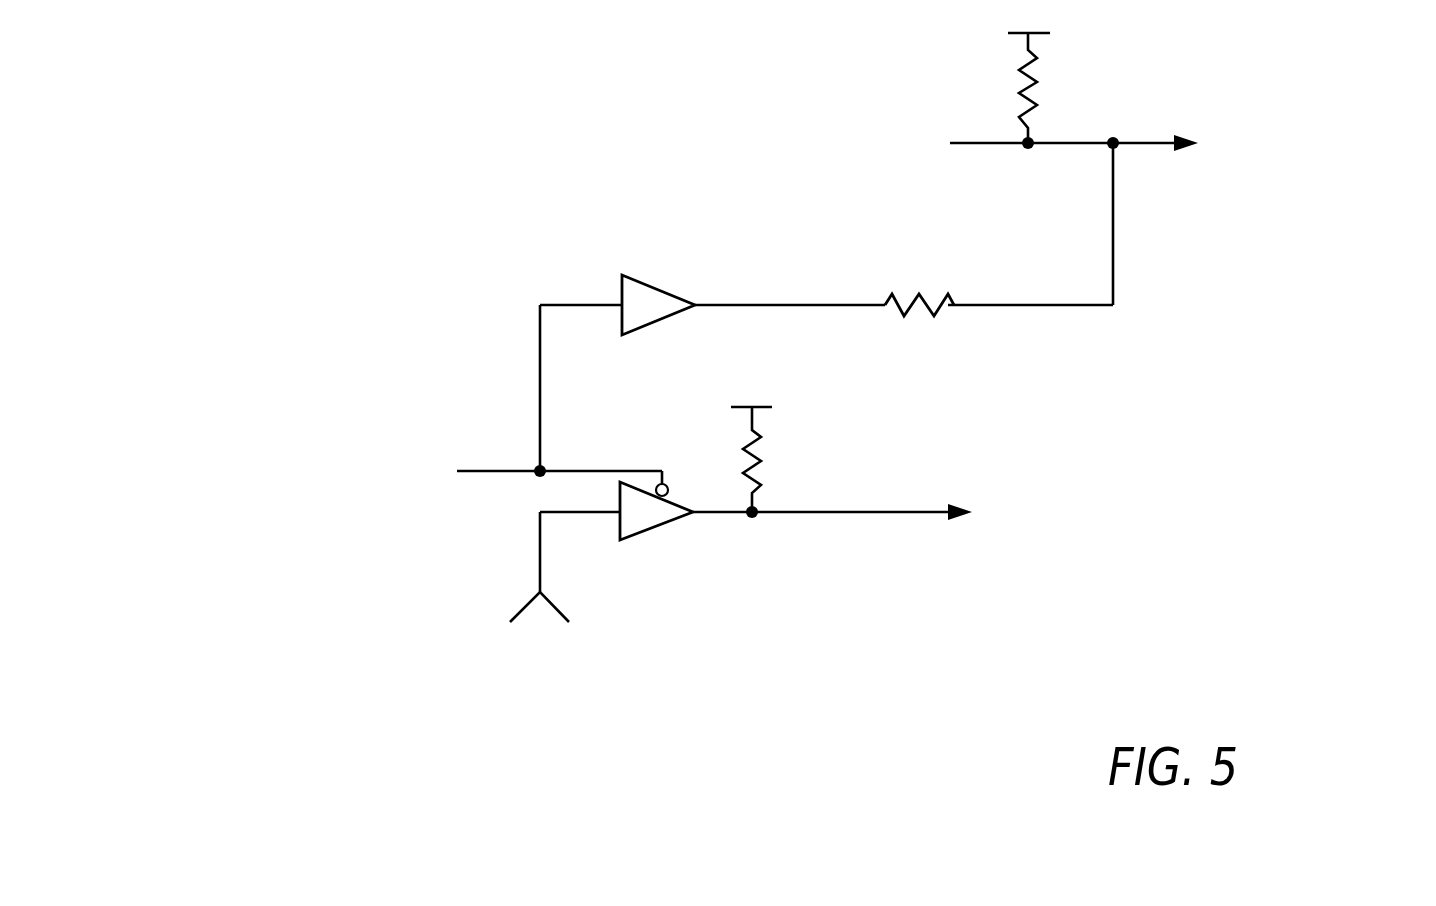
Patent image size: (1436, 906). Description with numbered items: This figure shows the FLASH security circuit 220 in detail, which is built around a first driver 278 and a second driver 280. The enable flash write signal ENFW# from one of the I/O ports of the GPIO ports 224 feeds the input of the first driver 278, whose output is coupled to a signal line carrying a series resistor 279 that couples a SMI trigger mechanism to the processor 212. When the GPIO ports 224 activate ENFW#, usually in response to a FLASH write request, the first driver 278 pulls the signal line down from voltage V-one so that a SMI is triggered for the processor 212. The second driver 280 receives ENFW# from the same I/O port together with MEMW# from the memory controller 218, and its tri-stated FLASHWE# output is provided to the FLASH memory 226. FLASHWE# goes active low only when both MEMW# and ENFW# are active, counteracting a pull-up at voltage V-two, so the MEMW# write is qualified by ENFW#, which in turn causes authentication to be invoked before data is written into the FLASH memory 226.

The FLASH security circuit 220 is at (430, 211).
The processor 212 is at (1342, 192).
The first driver 278 is at (650, 283).
The series resistor 279 is at (890, 292).
The second driver 280 is at (643, 532).
The GPIO ports 224 is at (275, 587).
The FLASH memory 226 is at (1073, 596).
The memory controller 218 is at (565, 764).